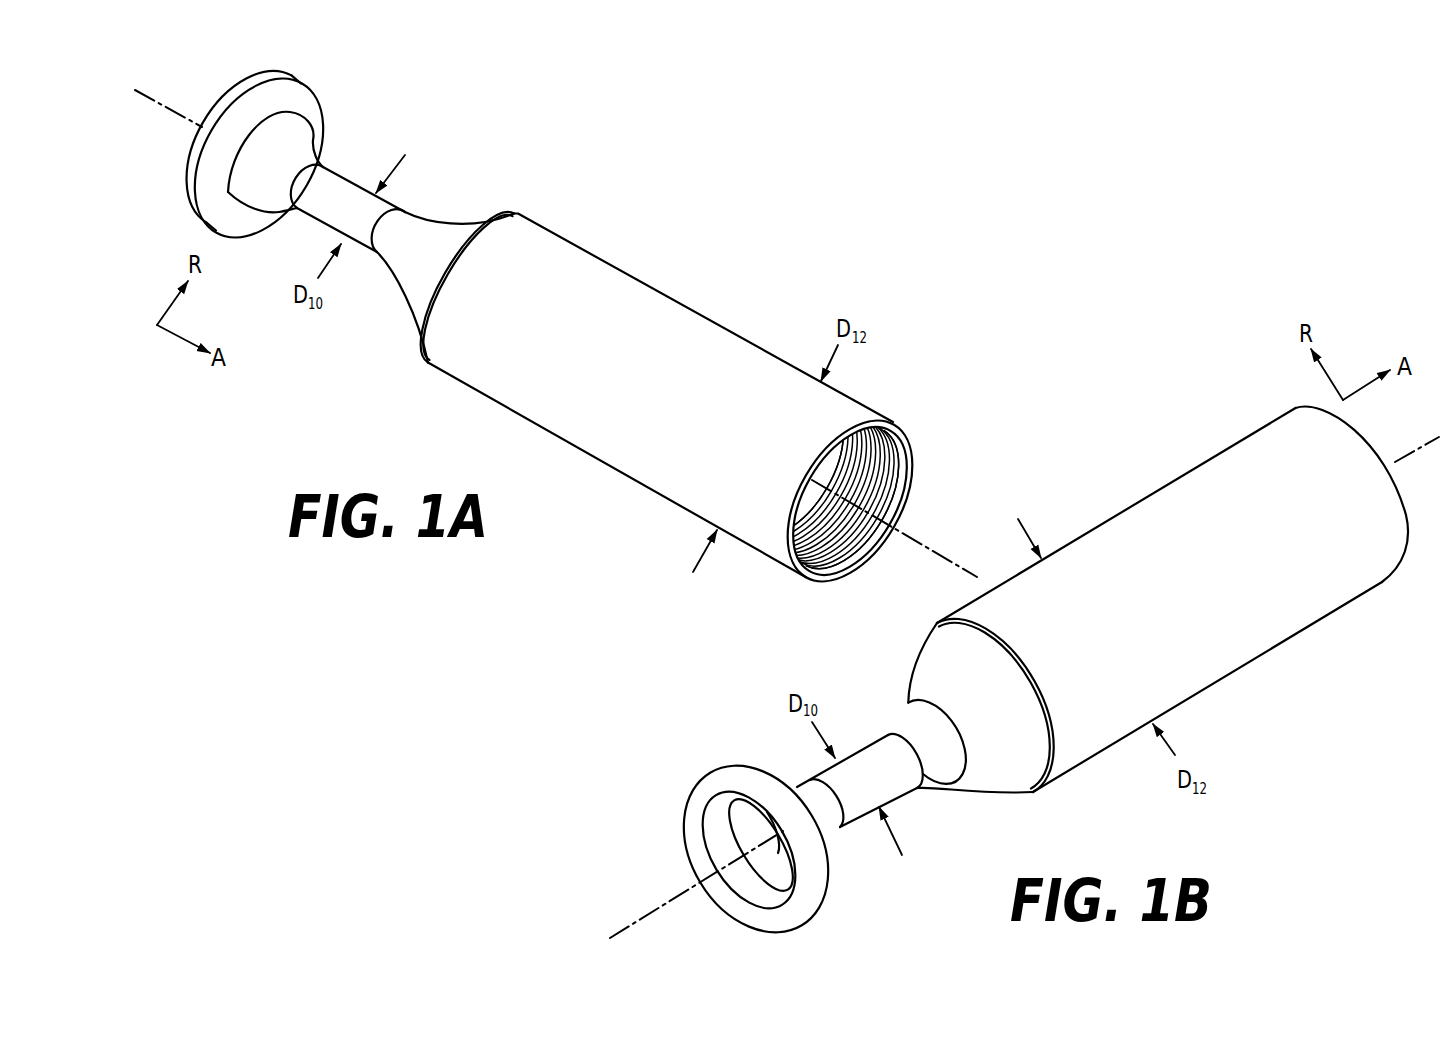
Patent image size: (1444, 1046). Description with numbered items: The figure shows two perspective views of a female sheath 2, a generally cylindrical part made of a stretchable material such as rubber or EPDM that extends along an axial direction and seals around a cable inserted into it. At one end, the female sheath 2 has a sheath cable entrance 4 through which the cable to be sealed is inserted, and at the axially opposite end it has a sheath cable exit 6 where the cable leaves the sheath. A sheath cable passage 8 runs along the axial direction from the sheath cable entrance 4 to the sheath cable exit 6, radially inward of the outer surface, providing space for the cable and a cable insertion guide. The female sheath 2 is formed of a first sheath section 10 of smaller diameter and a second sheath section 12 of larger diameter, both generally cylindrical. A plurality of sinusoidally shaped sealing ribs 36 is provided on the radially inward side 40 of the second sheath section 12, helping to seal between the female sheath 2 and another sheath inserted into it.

In FIG. 1A, the female sheath 2 is at (587, 345).
In FIG. 1B, the female sheath 2 is at (1003, 689).
In FIG. 1A, the sheath cable entrance 4 is at (224, 102).
In FIG. 1B, the sheath cable entrance 4 is at (736, 900).
In FIG. 1A, the sheath cable exit 6 is at (835, 585).
In FIG. 1B, the sheath cable exit 6 is at (1411, 546).
In FIG. 1A, the sheath cable passage 8 is at (832, 470).
In FIG. 1B, the sheath cable passage 8 is at (762, 829).
In FIG. 1A, the first sheath section 10 is at (358, 180).
In FIG. 1B, the first sheath section 10 is at (850, 828).
In FIG. 1A, the second sheath section 12 is at (672, 298).
In FIG. 1B, the second sheath section 12 is at (1152, 489).
In FIG. 1A, the sealing ribs 36 is at (873, 460).
In FIG. 1A, the radially inward side of second sheath section 40 is at (873, 460).